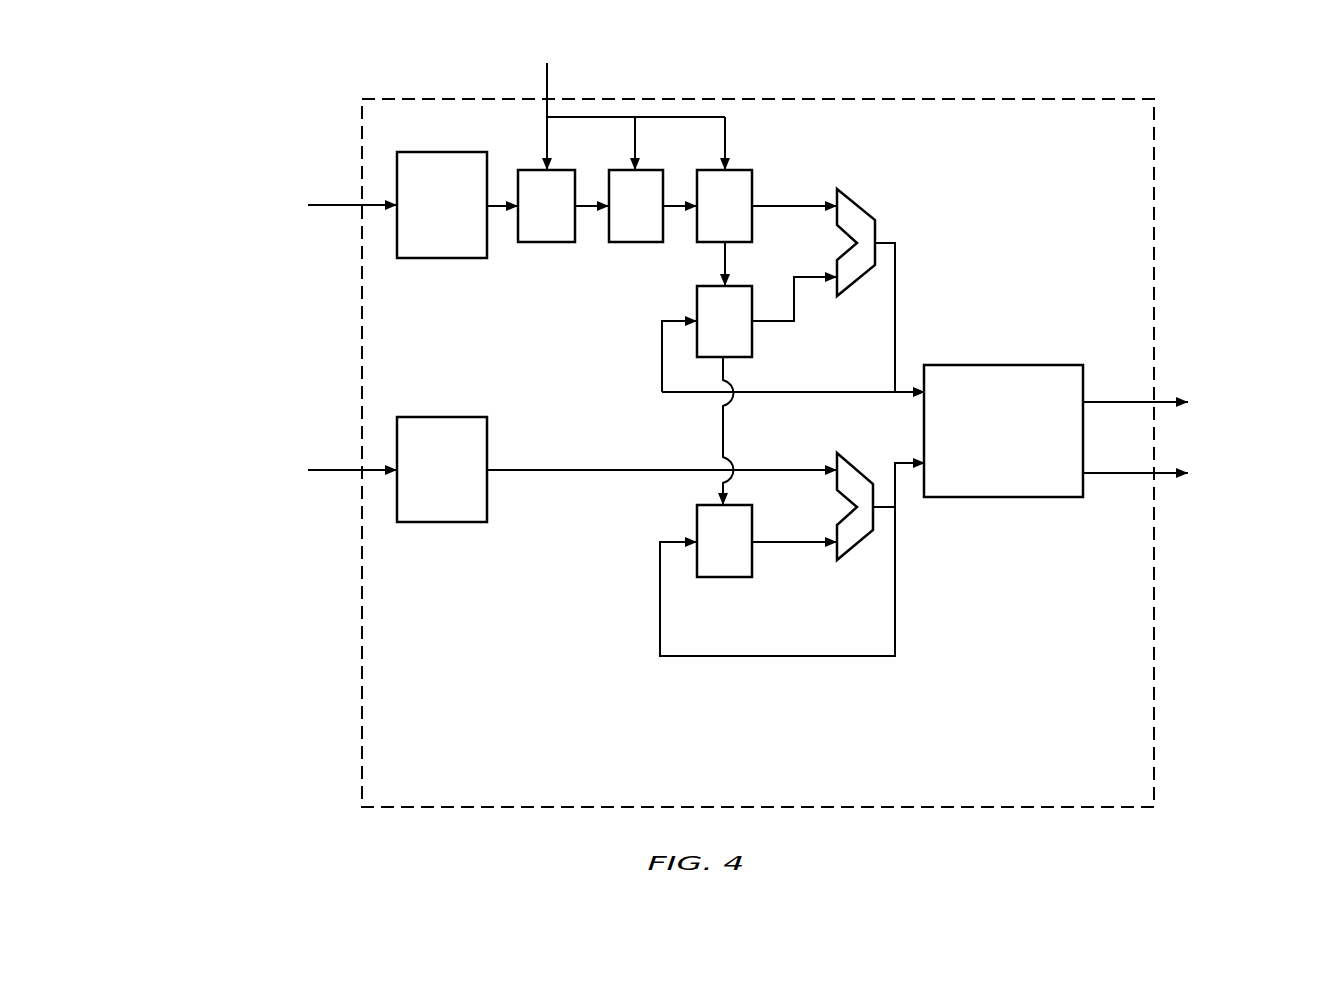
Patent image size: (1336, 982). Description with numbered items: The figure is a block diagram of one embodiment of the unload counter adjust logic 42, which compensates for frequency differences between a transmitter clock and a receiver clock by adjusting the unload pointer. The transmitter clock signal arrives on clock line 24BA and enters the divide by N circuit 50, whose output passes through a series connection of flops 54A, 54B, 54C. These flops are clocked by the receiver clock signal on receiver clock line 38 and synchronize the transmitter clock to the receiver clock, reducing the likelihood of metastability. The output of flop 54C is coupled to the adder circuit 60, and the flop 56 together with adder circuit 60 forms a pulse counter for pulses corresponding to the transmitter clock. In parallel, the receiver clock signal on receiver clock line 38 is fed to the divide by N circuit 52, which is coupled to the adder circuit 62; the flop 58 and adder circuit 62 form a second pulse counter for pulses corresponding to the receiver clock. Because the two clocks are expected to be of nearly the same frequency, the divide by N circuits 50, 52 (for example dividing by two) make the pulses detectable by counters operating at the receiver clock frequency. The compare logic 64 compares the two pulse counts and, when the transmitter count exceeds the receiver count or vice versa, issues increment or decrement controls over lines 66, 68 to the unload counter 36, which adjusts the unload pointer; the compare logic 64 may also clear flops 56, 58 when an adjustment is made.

The unload counter adjust logic 42 is at (1053, 792).
The receiver clock line 38 is at (547, 117).
The clock line 24BA is at (326, 208).
The divide by N circuit 50 is at (430, 246).
The divide by N circuit 52 is at (430, 509).
The flop 54A is at (528, 219).
The flop 54B is at (618, 219).
The flop 54C is at (707, 219).
The flop 56 is at (712, 332).
The flop 58 is at (712, 552).
The adder circuit 60 is at (860, 204).
The adder circuit 62 is at (852, 550).
The compare logic 64 is at (992, 457).
The line 66 is at (1140, 404).
The line 68 is at (1136, 475).
The unload counter 36 is at (1243, 428).